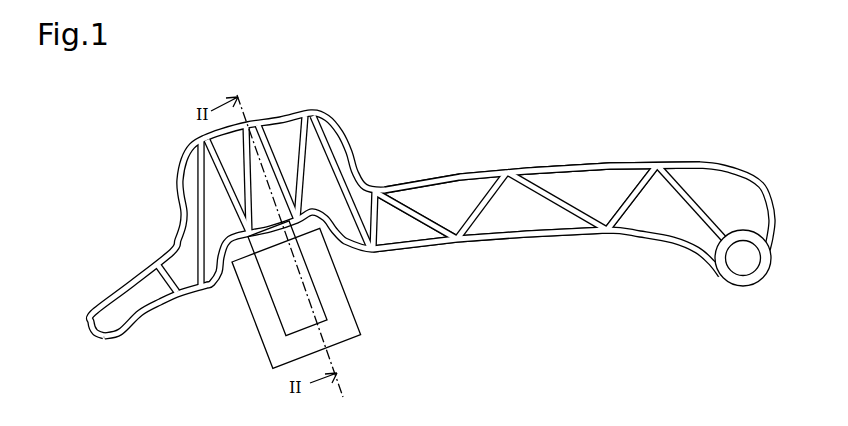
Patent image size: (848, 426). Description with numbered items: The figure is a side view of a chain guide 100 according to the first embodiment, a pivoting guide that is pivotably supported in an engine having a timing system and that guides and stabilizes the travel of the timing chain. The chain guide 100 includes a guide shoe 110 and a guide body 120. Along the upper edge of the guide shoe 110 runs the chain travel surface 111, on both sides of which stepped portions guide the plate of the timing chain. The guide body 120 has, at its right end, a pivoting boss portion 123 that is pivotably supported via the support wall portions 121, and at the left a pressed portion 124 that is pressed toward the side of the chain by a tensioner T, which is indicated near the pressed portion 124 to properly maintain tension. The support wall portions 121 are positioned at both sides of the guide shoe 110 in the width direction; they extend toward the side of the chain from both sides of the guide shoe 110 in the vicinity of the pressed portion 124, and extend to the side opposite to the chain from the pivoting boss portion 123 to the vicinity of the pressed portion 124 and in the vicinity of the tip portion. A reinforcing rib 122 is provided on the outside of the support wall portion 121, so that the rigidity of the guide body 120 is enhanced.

The chain guide 100 is at (113, 144).
The guide shoe 110 is at (483, 168).
The chain travel surface 111 is at (560, 164).
The guide body 120 is at (507, 242).
The support wall portions 121 is at (400, 225).
The reinforcing rib 122 is at (630, 203).
The pivoting boss portion 123 is at (733, 277).
The pressed portion 124 is at (250, 240).
The tensioner T is at (347, 288).